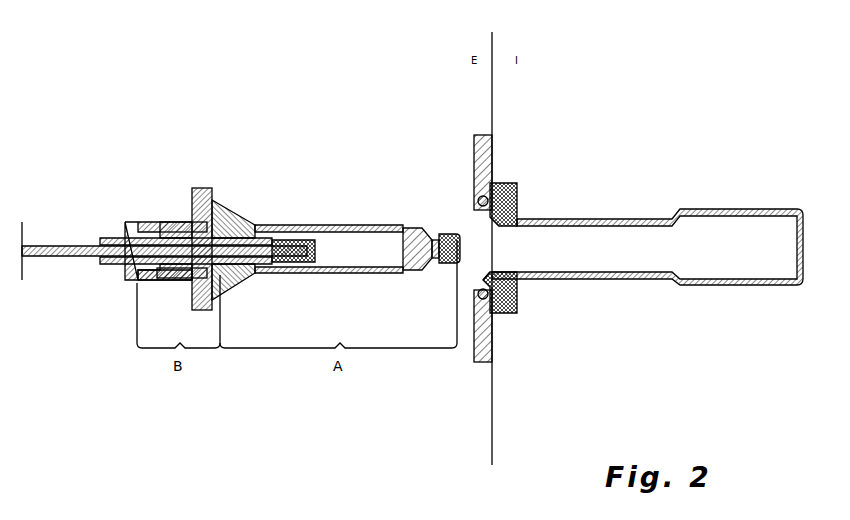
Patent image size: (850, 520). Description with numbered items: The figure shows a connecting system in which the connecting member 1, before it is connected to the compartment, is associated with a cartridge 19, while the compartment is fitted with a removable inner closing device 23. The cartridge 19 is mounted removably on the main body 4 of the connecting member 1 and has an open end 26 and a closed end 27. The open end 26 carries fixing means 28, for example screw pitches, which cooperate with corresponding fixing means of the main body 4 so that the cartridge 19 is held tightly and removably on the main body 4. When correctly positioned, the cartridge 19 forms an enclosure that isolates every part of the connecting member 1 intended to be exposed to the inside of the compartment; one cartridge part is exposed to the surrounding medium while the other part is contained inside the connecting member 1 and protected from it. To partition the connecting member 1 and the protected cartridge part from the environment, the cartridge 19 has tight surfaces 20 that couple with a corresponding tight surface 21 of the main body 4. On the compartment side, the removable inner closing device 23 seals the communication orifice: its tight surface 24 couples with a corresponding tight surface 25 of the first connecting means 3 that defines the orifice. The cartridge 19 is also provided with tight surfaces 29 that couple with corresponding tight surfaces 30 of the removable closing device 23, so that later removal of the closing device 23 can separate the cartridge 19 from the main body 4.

The connecting member 1 is at (112, 211).
The first connecting means 3 is at (473, 163).
The main body 4 is at (173, 282).
The cartridge 19 is at (338, 225).
The tight surfaces 20 is at (238, 263).
The tight surface 21 is at (197, 206).
The removable inner closing device 23 is at (593, 218).
The tight surface 24 is at (508, 217).
The tight surface 25 is at (478, 210).
The open end 26 is at (125, 228).
The closed end 27 is at (402, 242).
The fixing means 28 is at (160, 222).
The tight surfaces 29 is at (230, 222).
The tight surfaces 30 is at (488, 222).